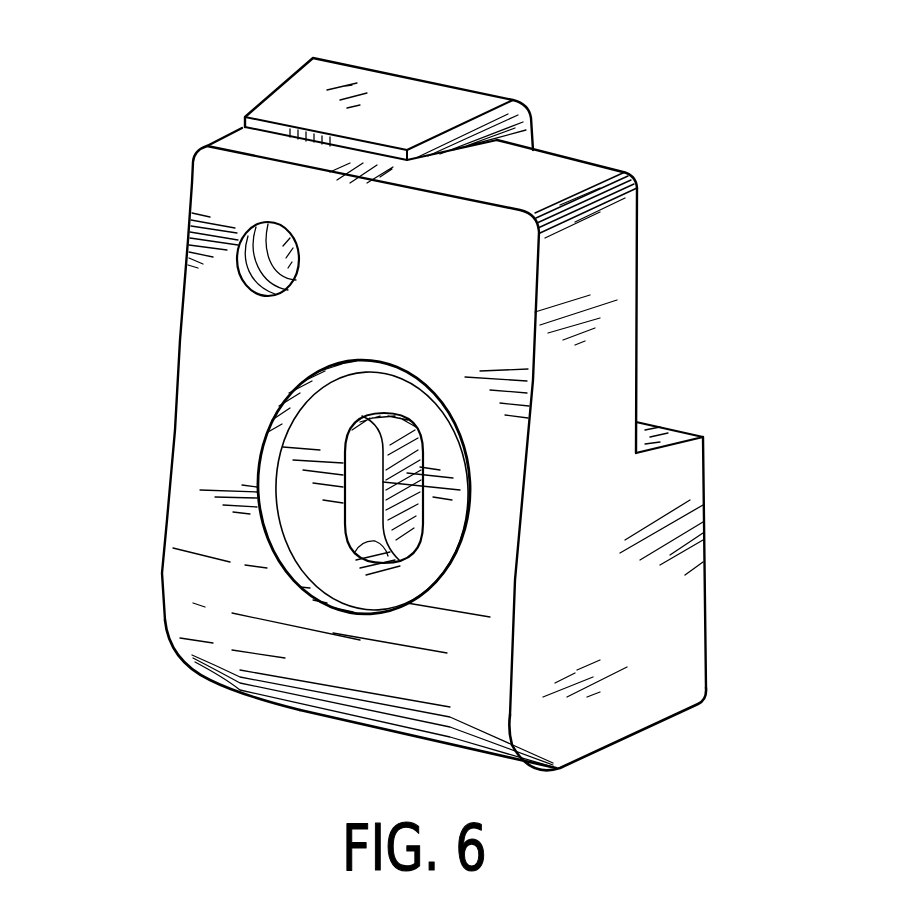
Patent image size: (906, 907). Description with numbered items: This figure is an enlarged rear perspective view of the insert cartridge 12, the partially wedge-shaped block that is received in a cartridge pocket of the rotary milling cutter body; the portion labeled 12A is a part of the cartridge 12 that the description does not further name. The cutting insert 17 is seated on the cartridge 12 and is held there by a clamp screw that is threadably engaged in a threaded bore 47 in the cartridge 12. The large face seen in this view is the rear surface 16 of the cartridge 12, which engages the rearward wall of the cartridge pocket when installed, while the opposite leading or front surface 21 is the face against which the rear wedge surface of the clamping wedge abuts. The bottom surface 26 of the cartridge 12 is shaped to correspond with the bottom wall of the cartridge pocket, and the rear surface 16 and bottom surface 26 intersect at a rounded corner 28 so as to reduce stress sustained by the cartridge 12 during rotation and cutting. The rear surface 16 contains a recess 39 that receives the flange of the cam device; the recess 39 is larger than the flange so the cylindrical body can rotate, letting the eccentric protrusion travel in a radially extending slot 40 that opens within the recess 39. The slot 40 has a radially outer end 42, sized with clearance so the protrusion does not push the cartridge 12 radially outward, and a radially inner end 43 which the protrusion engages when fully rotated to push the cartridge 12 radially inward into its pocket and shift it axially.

The cartridge 12 is at (637, 56).
The keeper extension portion 12A is at (738, 528).
The rear surface 16 is at (218, 337).
The insert 17 is at (400, 107).
The front surface 21 is at (706, 613).
The bottom surface 26 is at (633, 741).
The rounded corner 28 is at (168, 625).
The recess 39 is at (318, 450).
The slot 40 is at (408, 479).
The radially outer end 42 is at (368, 412).
The radially inner end 43 is at (365, 541).
The threaded bore 47 is at (250, 236).